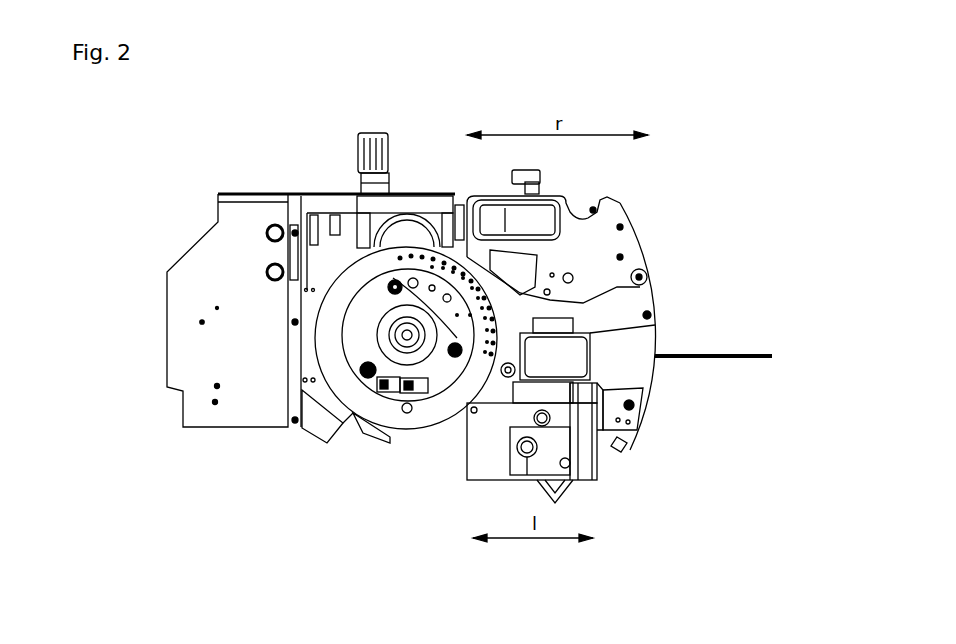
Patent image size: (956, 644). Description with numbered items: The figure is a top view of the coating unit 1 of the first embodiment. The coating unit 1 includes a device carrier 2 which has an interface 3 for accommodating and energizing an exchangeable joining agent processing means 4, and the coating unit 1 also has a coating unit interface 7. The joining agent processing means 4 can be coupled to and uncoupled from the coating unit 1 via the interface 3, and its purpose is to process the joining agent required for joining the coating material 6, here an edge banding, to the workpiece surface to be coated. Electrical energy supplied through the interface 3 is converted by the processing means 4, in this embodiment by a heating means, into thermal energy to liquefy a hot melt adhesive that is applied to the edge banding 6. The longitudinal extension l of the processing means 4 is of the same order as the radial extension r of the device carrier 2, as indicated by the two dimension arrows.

The coating unit 1 is at (141, 226).
The device carrier 2 is at (617, 352).
The interface 3 is at (548, 363).
The joining agent processing means 4 is at (497, 440).
The coating material 6 is at (688, 362).
The coating unit interface 7 is at (350, 296).